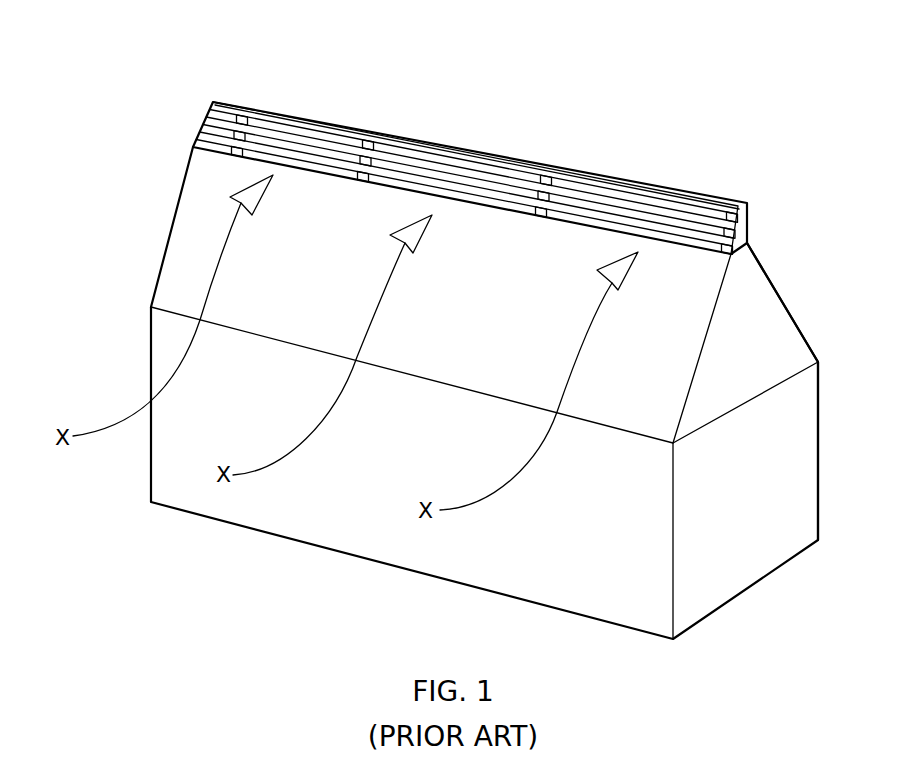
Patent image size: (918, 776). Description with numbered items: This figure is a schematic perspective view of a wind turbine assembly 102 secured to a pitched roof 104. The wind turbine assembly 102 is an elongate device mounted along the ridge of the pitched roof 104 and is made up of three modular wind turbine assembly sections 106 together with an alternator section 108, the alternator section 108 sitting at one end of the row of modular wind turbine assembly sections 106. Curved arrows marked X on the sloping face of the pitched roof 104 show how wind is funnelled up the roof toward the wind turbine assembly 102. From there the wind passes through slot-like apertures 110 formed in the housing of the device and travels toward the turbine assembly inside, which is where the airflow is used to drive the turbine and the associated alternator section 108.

The wind turbine assembly 102 is at (712, 123).
The pitched roof 104 is at (763, 258).
The modular wind turbine assembly sections 106 is at (583, 147).
The alternator section 108 is at (221, 98).
The slot-like apertures 110 is at (200, 130).